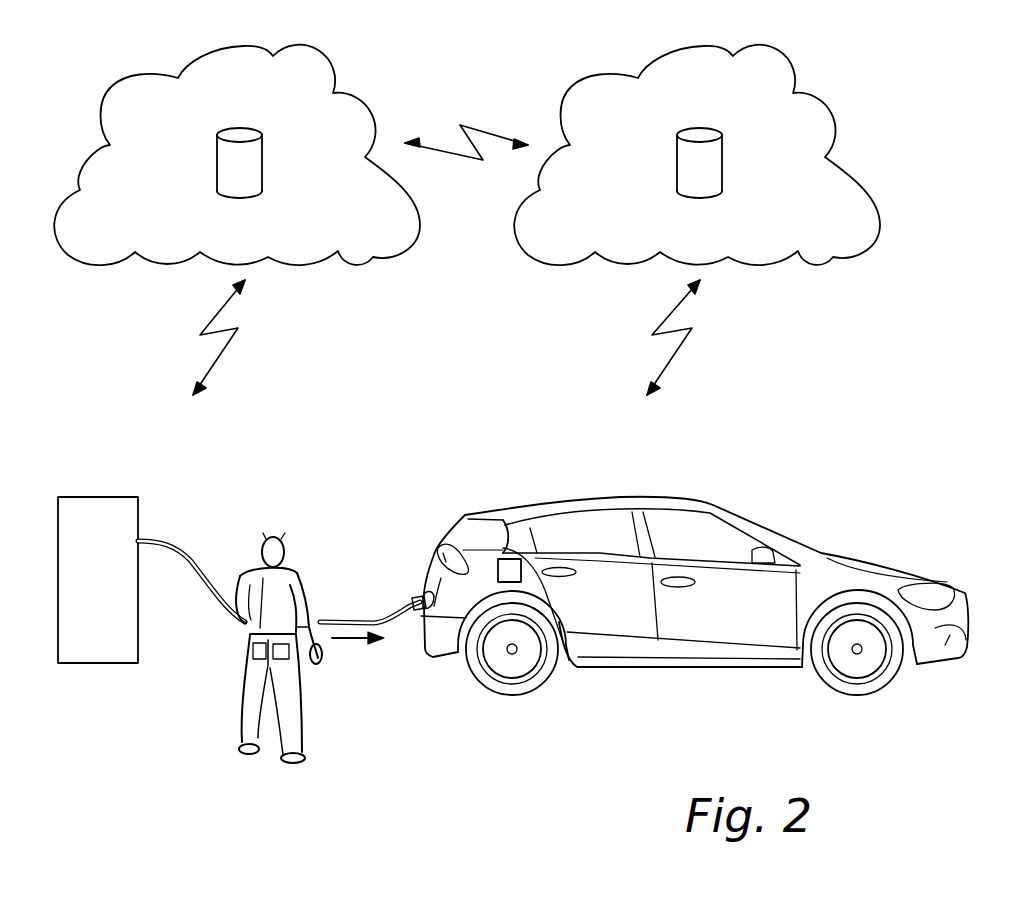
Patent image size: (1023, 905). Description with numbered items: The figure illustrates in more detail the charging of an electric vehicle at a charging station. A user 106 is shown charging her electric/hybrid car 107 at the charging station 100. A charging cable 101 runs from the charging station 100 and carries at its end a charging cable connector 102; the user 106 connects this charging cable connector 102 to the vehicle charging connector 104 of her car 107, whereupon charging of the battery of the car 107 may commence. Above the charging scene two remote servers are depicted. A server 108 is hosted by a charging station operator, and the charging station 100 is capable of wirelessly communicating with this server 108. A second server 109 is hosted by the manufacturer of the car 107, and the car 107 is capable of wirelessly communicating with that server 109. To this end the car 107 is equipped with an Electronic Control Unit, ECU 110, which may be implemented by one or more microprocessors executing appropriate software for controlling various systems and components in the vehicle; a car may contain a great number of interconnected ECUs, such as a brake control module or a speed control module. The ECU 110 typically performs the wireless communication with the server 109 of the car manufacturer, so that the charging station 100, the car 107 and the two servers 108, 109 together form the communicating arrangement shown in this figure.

The charging station 100 is at (93, 663).
The charging cable 101 is at (183, 547).
The charging cable connector 102 is at (410, 610).
The vehicle charging connector 104 is at (420, 603).
The user 106 is at (302, 707).
The electric/hybrid car 107 is at (703, 512).
The server 108 is at (217, 158).
The server 109 is at (727, 153).
The Electronic Control Unit (ECU) 110 is at (510, 559).